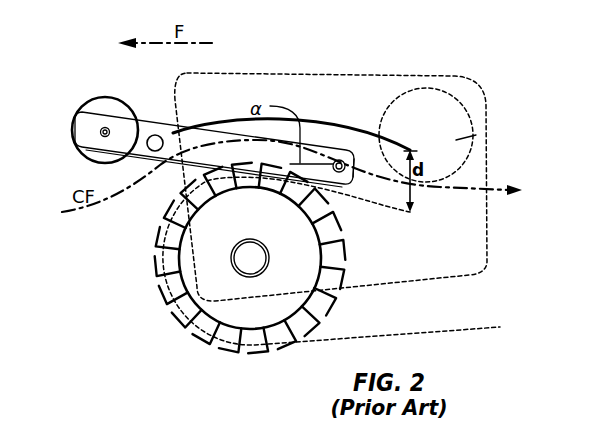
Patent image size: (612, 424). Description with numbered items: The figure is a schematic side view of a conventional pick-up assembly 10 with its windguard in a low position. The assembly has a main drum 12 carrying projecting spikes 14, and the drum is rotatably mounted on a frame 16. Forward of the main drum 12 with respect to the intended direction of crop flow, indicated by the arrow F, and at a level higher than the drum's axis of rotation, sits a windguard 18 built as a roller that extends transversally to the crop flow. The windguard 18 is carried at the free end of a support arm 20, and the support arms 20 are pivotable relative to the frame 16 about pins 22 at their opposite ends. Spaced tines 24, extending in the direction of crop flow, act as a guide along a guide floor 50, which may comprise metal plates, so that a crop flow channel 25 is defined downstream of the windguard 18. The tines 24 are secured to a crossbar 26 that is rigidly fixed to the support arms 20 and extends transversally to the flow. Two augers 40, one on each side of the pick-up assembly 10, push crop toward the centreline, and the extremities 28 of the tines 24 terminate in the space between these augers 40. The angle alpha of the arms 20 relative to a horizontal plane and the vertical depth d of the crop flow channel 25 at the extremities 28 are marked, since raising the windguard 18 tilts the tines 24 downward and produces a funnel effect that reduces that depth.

The pick-up assembly 10 is at (463, 58).
The main drum 12 is at (208, 312).
The projecting spikes 14 is at (152, 234).
The frame 16 is at (488, 244).
The windguard 18 is at (93, 100).
The support arm 20 is at (235, 138).
The pin 22 is at (340, 158).
The tines 24 is at (312, 122).
The crop flow channel 25 is at (369, 147).
The crossbar 26 is at (155, 135).
The extremities of the tines 28 is at (412, 151).
The auger 40 is at (466, 135).
The guide floor 50 is at (459, 329).